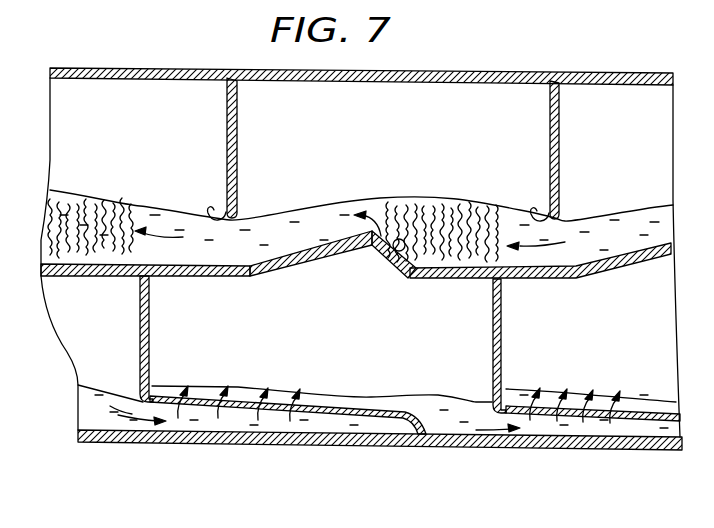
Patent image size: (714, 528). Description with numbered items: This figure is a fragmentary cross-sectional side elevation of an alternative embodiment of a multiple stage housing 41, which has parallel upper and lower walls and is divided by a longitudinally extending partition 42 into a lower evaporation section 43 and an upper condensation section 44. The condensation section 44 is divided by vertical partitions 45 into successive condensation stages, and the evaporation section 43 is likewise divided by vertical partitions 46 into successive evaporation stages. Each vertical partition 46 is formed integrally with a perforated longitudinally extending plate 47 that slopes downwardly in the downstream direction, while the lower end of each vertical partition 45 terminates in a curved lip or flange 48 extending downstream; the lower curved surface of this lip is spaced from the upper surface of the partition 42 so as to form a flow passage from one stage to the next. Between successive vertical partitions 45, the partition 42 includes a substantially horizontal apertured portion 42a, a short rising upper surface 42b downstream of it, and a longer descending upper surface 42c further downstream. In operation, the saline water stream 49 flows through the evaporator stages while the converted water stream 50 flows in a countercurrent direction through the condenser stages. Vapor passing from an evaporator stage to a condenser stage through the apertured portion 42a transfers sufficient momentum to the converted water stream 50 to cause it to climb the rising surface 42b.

The housing 41 is at (463, 70).
The partition 42 is at (268, 282).
The horizontal apertured portion 42a is at (453, 276).
The rising upper surface 42b is at (398, 249).
The descending upper surface 42c is at (338, 246).
The evaporation section 43 is at (368, 345).
The condensation section 44 is at (425, 148).
The vertical partition 45 is at (560, 133).
The vertical partition 46 is at (150, 315).
The perforated plate 47 is at (331, 408).
The curved lip 48 is at (205, 216).
The saline water stream 49 is at (137, 418).
The converted water stream 50 is at (152, 233).